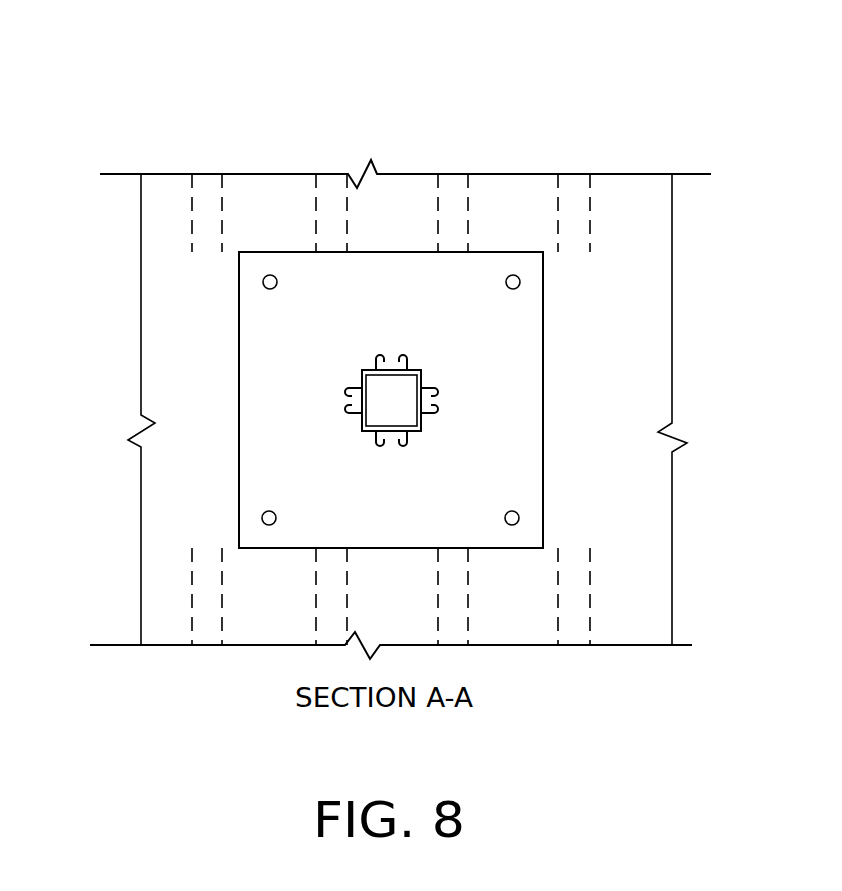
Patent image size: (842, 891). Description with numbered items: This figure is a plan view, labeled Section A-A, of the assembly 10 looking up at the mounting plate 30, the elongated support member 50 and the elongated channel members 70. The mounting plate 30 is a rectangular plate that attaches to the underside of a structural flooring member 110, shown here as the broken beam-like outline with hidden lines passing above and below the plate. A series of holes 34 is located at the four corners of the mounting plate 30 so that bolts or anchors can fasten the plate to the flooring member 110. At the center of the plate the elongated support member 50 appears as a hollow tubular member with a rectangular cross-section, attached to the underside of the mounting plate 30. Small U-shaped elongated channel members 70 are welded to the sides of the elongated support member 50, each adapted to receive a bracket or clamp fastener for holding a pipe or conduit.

The assembly 10 is at (390, 196).
The structural flooring member 110 is at (527, 174).
The mounting plate 30 is at (239, 463).
The holes 34 is at (520, 286).
The elongated support member 50 is at (421, 372).
The elongated channel member 70 is at (380, 446).